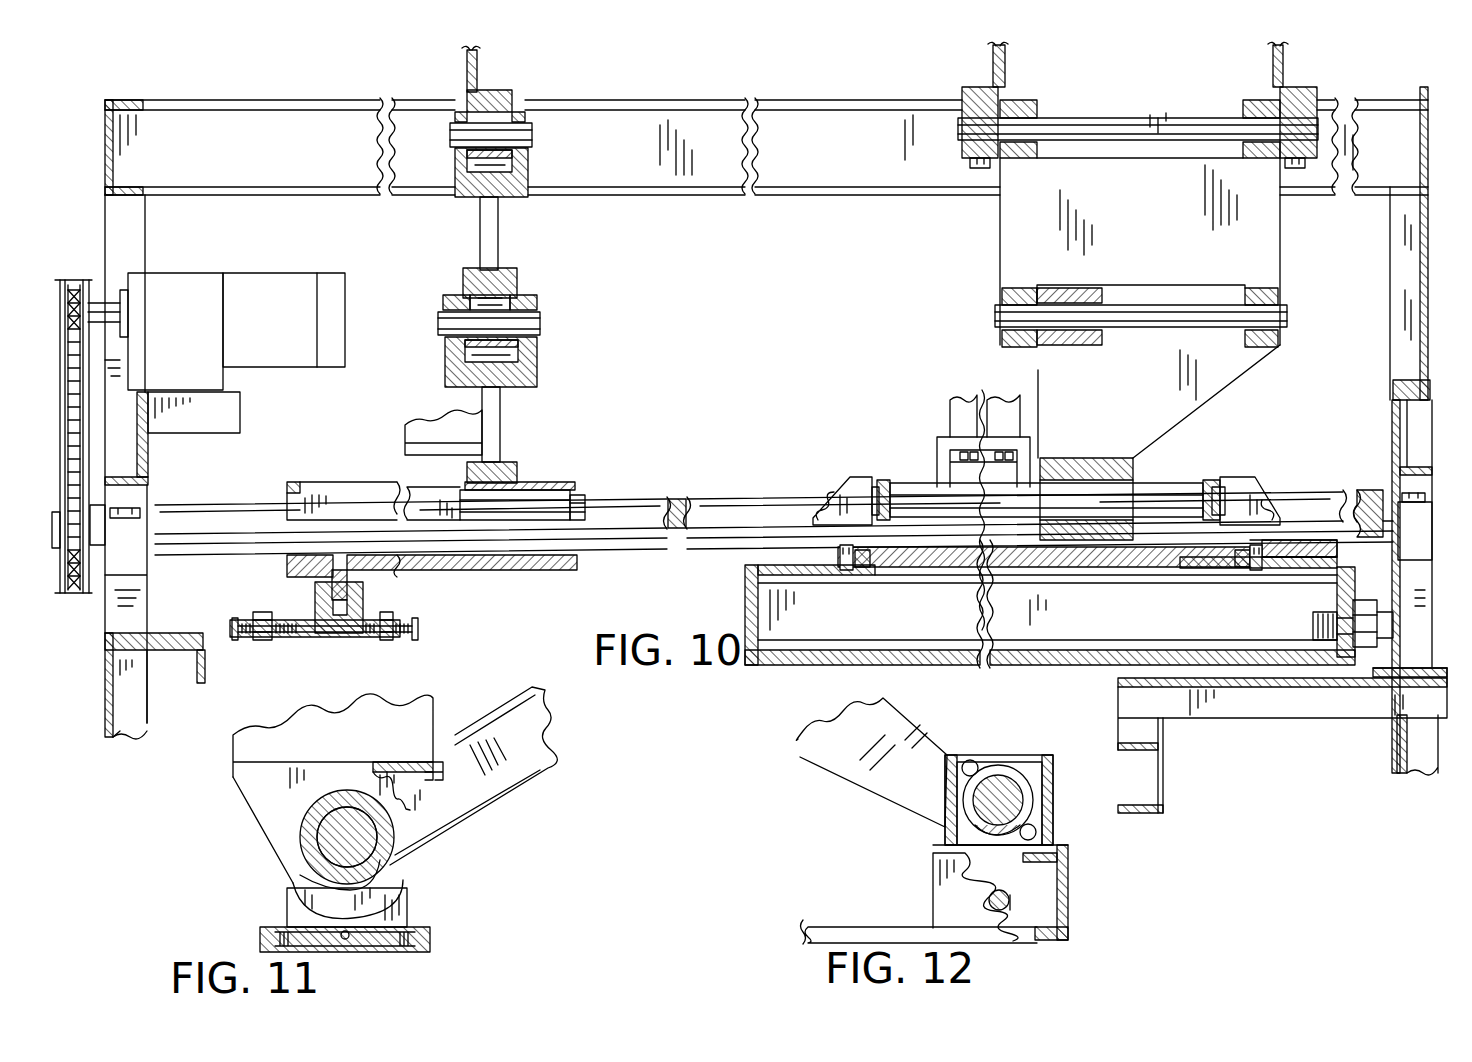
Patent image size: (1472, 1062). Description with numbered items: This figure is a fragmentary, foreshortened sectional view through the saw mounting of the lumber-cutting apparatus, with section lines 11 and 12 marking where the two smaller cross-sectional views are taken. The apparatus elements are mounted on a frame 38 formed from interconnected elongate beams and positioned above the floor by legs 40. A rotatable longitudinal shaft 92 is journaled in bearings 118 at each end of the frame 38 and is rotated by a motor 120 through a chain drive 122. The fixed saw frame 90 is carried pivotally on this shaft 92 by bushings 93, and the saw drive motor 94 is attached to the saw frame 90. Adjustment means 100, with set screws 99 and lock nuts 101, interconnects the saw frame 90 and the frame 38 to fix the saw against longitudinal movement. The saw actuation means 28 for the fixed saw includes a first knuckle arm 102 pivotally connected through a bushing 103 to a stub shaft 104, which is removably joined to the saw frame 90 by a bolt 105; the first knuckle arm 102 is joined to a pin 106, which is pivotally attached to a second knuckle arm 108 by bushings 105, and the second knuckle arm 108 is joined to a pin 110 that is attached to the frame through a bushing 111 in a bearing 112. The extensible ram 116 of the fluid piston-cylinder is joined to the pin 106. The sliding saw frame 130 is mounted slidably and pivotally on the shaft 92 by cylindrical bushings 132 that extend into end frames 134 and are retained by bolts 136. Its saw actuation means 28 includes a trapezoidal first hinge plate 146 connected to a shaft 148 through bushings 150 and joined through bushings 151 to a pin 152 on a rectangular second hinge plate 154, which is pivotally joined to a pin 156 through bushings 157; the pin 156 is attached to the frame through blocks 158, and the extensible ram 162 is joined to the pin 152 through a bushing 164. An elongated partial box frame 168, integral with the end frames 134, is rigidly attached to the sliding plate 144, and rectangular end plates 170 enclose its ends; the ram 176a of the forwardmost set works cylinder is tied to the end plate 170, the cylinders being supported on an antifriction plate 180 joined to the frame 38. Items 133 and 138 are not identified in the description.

In FIG. 10, the section line 11- 11 is at (360, 407).
In FIG. 10, the section line 12- 12 is at (1310, 428).
In FIG. 10, the saw actuation means 28 is at (565, 350).
In FIG. 10, the frame 38 is at (440, 108).
In FIG. 10, the legs 40 is at (127, 715).
In FIG. 10, the saw frame 90 is at (415, 500).
In FIG. 11, the saw frame 90 is at (265, 790).
In FIG. 10, the longitudinal shaft 92 is at (705, 500).
In FIG. 11, the longitudinal shaft 92 is at (318, 840).
In FIG. 12, the longitudinal shaft 92 is at (998, 783).
In FIG. 10, the bushings 93 is at (290, 560).
In FIG. 11, the bushings 93 is at (300, 862).
In FIG. 10, the saw drive motor 94 is at (428, 433).
In FIG. 11, the saw drive motor 94 is at (307, 730).
In FIG. 10, the set screws 99 is at (232, 625).
In FIG. 11, the set screws 99 is at (338, 945).
In FIG. 10, the adjustment means 100 is at (263, 665).
In FIG. 11, the adjustment means 100 is at (427, 910).
In FIG. 10, the lock nuts 101 is at (258, 612).
In FIG. 10, the first knuckle arm 102 is at (500, 404).
In FIG. 10, the bushing 103 is at (535, 474).
In FIG. 10, the stub shaft 104 is at (568, 484).
In FIG. 10, the bolt 105 is at (522, 300).
In FIG. 10, the pin 106 is at (538, 325).
In FIG. 10, the second knuckle arm 108 is at (492, 224).
In FIG. 10, the pin 110 is at (532, 128).
In FIG. 10, the bushing 111 is at (500, 100).
In FIG. 10, the bearing 112 is at (512, 108).
In FIG. 10, the extensible ram 116 is at (470, 298).
In FIG. 10, the bearings 118 is at (132, 556).
In FIG. 10, the motor 120 is at (278, 290).
In FIG. 10, the chain drive 122 is at (72, 283).
In FIG. 10, the sliding saw frame 130 is at (895, 485).
In FIG. 12, the sliding saw frame 130 is at (832, 762).
In FIG. 10, the cylindrical bushings 132 is at (905, 568).
In FIG. 12, the cylindrical bushings 132 is at (1020, 770).
In FIG. 10, the bearing spacer 133 is at (862, 568).
In FIG. 10, the end frames 134 is at (845, 495).
In FIG. 12, the end frames 134 is at (952, 835).
In FIG. 10, the bolts 136 is at (845, 570).
In FIG. 12, the bolts 136 is at (970, 760).
In FIG. 10, the support posts 138 is at (1000, 408).
In FIG. 10, the sliding plate 144 is at (962, 660).
In FIG. 12, the sliding plate 144 is at (855, 932).
In FIG. 10, the first hinge plate 146 is at (1150, 440).
In FIG. 10, the shaft 148 is at (935, 498).
In FIG. 10, the bushings 150 is at (1135, 470).
In FIG. 10, the bushings 151 is at (1030, 290).
In FIG. 10, the pin 152 is at (1287, 312).
In FIG. 10, the second hinge plate 154 is at (1268, 243).
In FIG. 10, the pin 156 is at (1110, 125).
In FIG. 10, the bushings 157 is at (1015, 103).
In FIG. 10, the blocks 158 is at (962, 100).
In FIG. 10, the extensible ram 162 is at (1095, 290).
In FIG. 10, the bushing 164 is at (1085, 345).
In FIG. 10, the partial box frame 168 is at (828, 645).
In FIG. 12, the partial box frame 168 is at (1066, 890).
In FIG. 10, the end plates 170 is at (745, 605).
In FIG. 12, the end plates 170 is at (948, 893).
In FIG. 10, the ram 176a is at (1313, 625).
In FIG. 12, the ram 176a is at (998, 912).
In FIG. 10, the antifriction plate 180 is at (1382, 690).